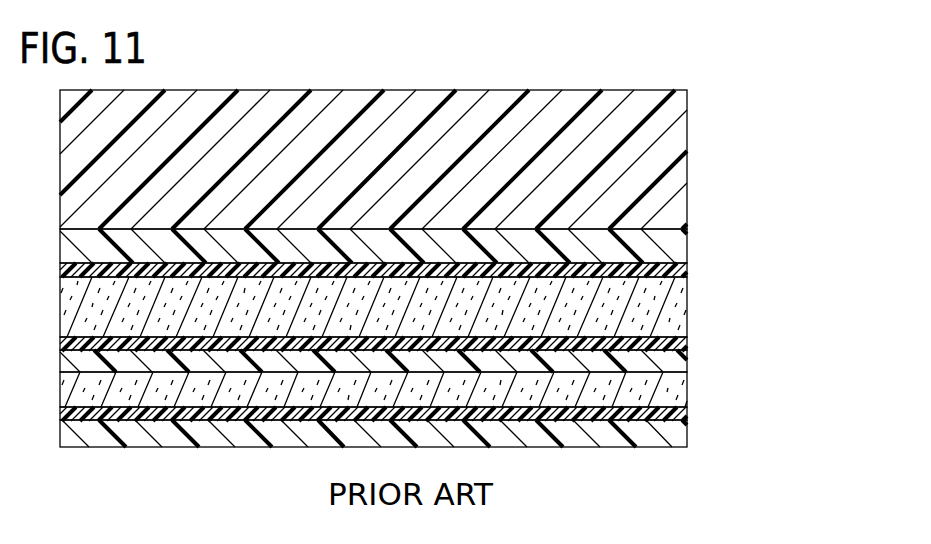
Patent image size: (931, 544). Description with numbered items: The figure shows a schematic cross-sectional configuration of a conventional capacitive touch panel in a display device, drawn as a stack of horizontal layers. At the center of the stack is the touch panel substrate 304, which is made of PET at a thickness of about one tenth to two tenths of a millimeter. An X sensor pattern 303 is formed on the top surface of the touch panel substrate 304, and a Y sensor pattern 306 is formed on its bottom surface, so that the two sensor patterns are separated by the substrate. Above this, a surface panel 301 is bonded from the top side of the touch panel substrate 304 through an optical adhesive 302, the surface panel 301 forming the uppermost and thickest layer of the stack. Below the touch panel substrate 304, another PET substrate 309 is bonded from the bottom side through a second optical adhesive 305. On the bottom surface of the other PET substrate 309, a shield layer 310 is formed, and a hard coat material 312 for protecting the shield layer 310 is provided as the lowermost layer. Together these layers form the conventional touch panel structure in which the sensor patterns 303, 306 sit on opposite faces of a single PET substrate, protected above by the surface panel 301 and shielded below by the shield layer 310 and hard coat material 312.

The surface panel 301 is at (687, 158).
The optical adhesive 302 is at (687, 242).
The X sensor pattern 303 is at (687, 270).
The touch panel substrate 304 is at (687, 302).
The optical adhesive 305 is at (687, 358).
The Y sensor pattern 306 is at (687, 341).
The PET substrate 309 is at (687, 393).
The shield layer 310 is at (687, 412).
The hard coat material 312 is at (687, 435).